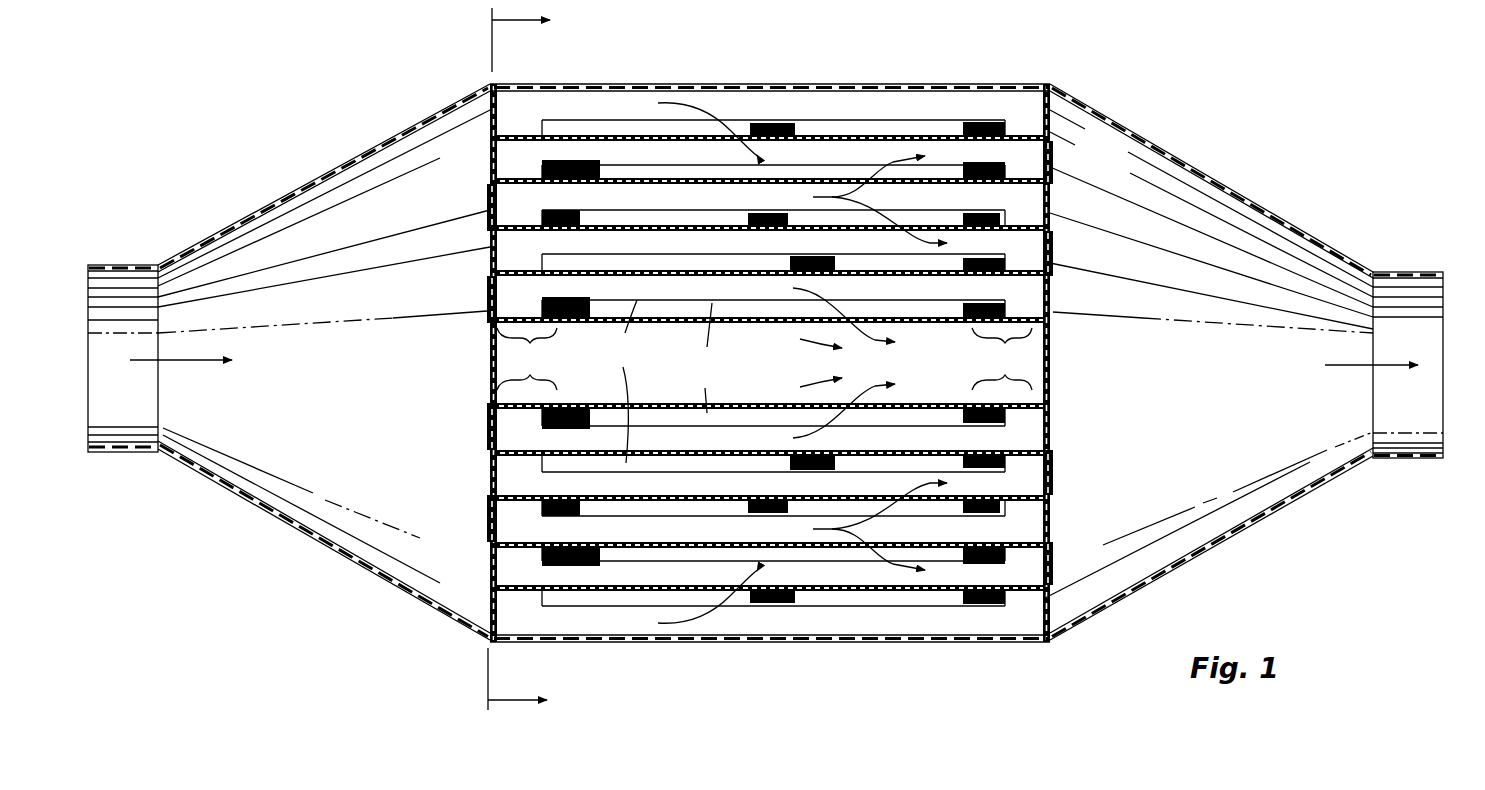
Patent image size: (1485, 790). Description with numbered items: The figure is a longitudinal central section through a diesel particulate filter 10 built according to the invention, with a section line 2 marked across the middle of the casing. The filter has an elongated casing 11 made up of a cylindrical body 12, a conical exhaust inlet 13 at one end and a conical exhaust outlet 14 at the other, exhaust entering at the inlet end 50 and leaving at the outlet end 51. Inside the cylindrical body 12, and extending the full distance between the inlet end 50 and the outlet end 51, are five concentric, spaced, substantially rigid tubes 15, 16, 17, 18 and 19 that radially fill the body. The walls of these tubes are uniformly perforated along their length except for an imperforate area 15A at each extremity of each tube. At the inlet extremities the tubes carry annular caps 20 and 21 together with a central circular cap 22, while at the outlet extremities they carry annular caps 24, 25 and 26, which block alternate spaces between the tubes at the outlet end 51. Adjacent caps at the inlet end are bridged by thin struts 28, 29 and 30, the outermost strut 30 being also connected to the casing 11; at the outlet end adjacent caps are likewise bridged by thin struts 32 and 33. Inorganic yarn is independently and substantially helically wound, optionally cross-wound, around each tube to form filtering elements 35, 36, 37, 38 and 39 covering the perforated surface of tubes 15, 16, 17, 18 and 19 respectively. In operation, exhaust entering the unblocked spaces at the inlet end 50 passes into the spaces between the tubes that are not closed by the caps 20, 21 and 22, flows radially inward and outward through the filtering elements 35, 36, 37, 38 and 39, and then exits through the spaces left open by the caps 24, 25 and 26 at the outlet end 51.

The diesel particulate filter 10 is at (1252, 68).
The casing 11 is at (365, 574).
The cylindrical body 12 is at (958, 84).
The conical exhaust inlet 13 is at (272, 206).
The conical exhaust outlet 14 is at (1300, 233).
The tube 15 is at (888, 397).
The imperforate area 15A is at (767, 359).
The tube 16 is at (1015, 272).
The tube 17 is at (1014, 227).
The tube 18 is at (1015, 182).
The tube 19 is at (888, 133).
The annular cap 20 is at (490, 248).
The annular cap 21 is at (490, 152).
The central circular cap 22 is at (490, 357).
The annular cap 24 is at (1053, 302).
The annular cap 25 is at (1053, 205).
The annular cap 26 is at (1070, 100).
The strut 28 is at (488, 297).
The strut 29 is at (490, 193).
The strut 30 is at (465, 110).
The strut 32 is at (1053, 243).
The strut 33 is at (1055, 160).
The filtering element 35 is at (707, 358).
The filtering element 36 is at (622, 381).
The filtering element 37 is at (797, 210).
The filtering element 38 is at (690, 163).
The filtering element 39 is at (642, 128).
The inlet end 50 is at (130, 455).
The outlet end 51 is at (1402, 460).
The section line 2- 2 is at (541, 364).